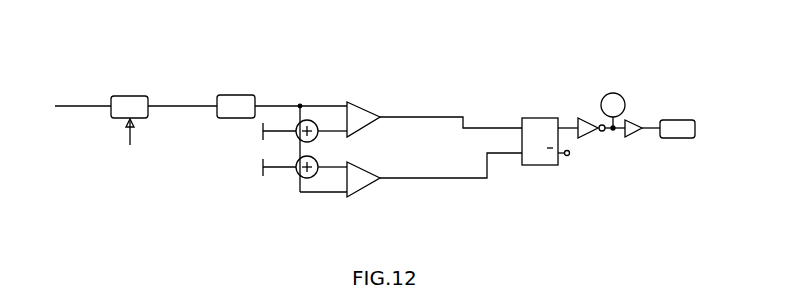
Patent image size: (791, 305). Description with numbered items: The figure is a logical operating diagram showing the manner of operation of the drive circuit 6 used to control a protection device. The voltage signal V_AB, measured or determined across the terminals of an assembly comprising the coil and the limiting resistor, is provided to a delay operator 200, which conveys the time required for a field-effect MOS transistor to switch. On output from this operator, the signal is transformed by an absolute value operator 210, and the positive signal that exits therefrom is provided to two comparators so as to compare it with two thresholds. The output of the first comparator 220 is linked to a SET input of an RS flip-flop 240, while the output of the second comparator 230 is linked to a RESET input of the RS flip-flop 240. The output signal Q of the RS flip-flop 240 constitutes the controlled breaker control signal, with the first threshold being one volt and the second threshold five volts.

The drive circuit 6 is at (523, 68).
The delay operator 200 is at (130, 95).
The absolute value operator 210 is at (239, 95).
The first comparator 220 is at (364, 101).
The second comparator 230 is at (365, 197).
The RS flip-flop 240 is at (542, 165).